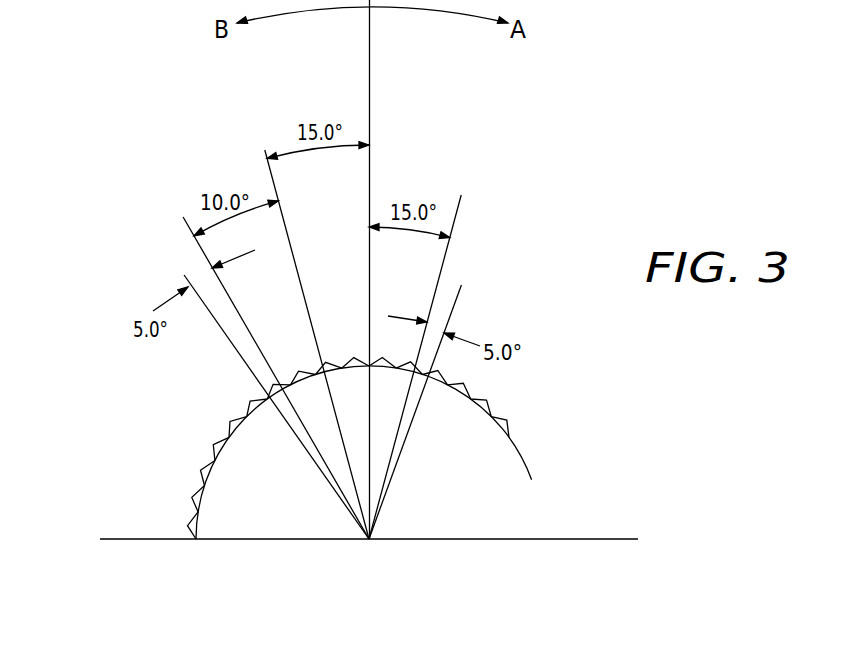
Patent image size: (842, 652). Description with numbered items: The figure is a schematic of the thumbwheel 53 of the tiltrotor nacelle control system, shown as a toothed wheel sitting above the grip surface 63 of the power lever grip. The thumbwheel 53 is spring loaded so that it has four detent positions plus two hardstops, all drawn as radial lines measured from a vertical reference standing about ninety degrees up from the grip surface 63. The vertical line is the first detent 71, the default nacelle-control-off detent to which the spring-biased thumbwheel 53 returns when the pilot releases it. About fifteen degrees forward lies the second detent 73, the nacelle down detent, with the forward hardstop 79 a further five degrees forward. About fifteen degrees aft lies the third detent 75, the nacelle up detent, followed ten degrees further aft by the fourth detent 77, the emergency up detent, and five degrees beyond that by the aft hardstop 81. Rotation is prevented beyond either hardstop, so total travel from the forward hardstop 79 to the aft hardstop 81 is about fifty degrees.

The first detent 71 is at (370, 100).
The third detent 75 is at (270, 166).
The fourth detent 77 is at (187, 227).
The aft hardstop position 81 is at (228, 343).
The second detent 73 is at (513, 188).
The forward hardstop position 79 is at (455, 303).
The thumbwheel 53 is at (523, 457).
The grip surface 63 is at (532, 540).